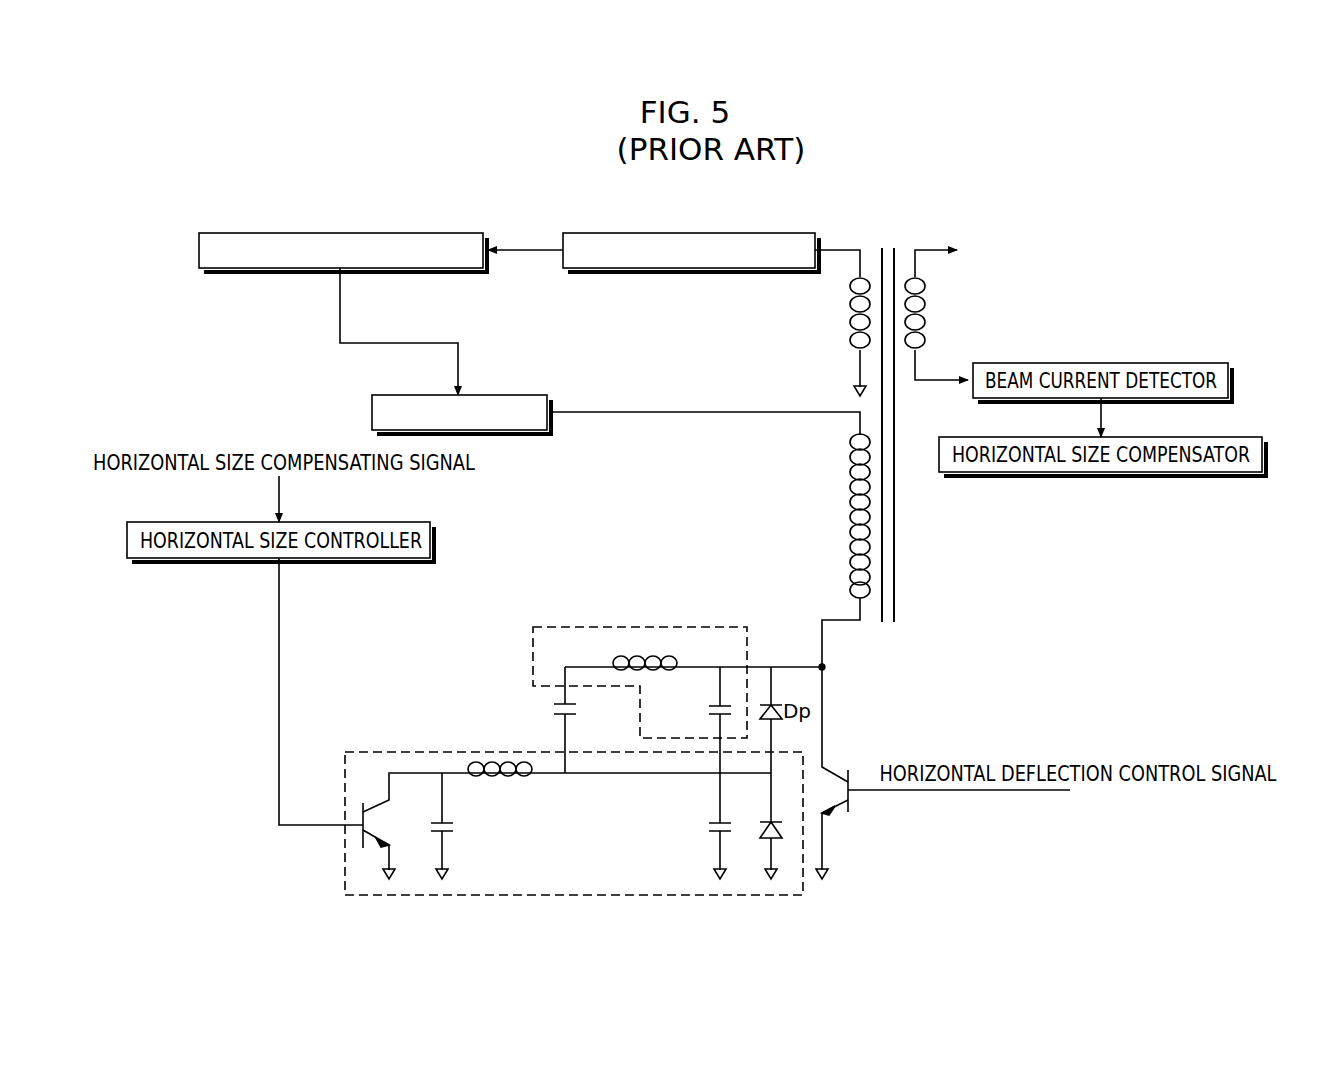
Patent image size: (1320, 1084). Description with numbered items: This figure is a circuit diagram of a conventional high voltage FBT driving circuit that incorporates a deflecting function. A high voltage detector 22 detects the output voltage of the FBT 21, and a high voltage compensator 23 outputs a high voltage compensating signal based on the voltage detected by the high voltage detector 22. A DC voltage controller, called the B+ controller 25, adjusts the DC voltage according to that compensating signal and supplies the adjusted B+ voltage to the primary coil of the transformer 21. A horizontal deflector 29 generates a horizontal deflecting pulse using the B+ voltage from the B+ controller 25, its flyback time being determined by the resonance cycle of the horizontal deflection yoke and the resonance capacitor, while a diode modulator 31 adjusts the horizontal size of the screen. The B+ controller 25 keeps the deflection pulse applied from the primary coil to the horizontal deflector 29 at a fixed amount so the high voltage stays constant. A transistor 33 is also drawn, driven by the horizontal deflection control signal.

The FBT (transformer) 21 is at (887, 247).
The high voltage detector 22 is at (725, 270).
The high voltage compensator 23 is at (199, 250).
The DC voltage controller (B+ controller) 25 is at (372, 412).
The horizontal deflector 29 is at (533, 660).
The diode modulator 31 is at (345, 870).
The horizontal deflection output transistor 33 is at (832, 767).